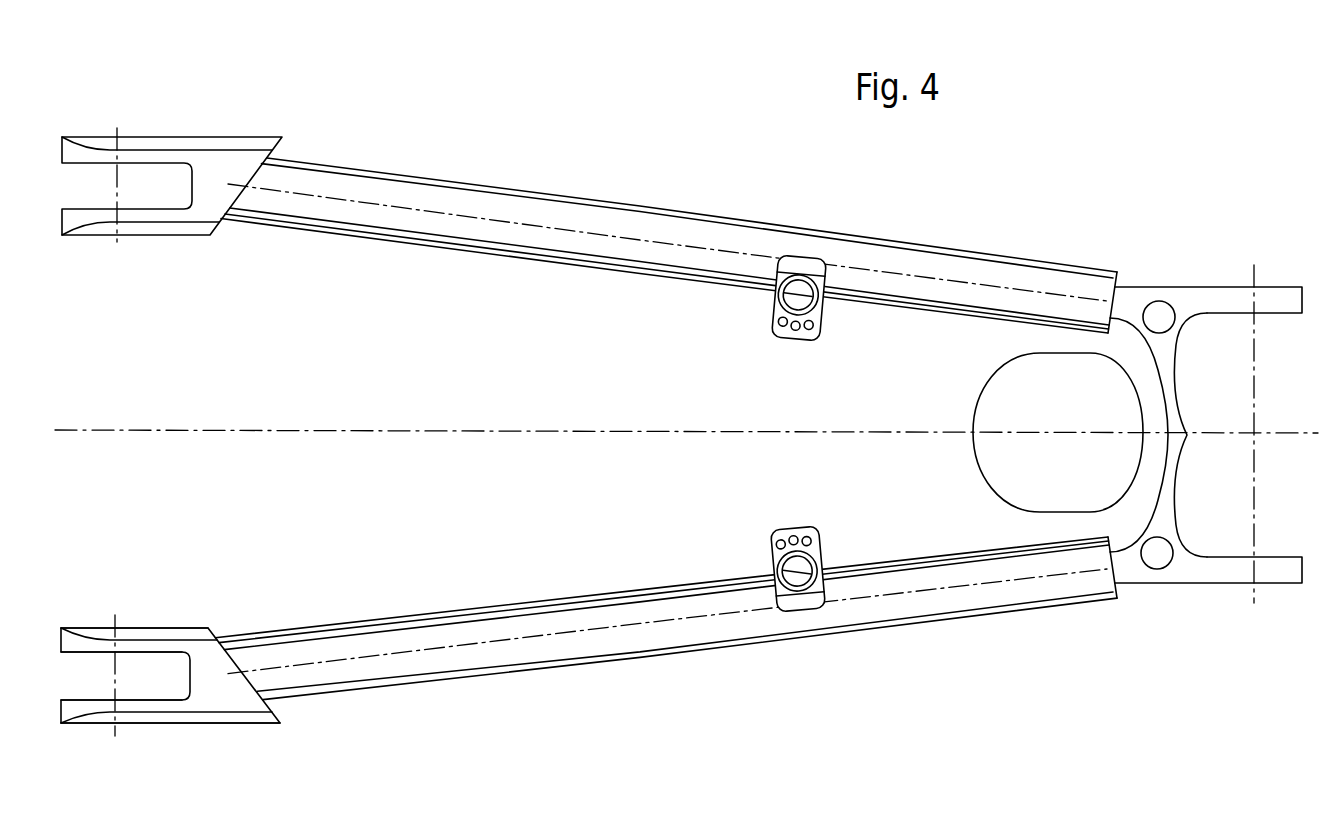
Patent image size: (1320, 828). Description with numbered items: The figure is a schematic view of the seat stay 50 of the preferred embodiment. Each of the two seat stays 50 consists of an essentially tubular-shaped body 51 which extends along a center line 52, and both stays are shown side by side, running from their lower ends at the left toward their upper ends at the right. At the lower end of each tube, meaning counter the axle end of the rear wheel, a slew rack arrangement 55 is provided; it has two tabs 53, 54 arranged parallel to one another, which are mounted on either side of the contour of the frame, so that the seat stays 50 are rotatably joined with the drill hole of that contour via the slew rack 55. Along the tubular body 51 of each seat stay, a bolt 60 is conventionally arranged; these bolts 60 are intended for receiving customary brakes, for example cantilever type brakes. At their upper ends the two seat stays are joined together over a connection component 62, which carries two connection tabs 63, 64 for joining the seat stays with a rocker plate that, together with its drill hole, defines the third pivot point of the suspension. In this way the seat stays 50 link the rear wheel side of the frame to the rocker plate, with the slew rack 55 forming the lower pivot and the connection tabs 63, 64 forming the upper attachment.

The seat stay 50 is at (582, 198).
The tubular-shaped body 51 is at (419, 678).
The center line 52 is at (540, 646).
The tab 53 is at (72, 718).
The tab 54 is at (83, 636).
The slew rack arrangement 55 is at (211, 697).
The bolt 60 is at (800, 597).
The connection component 62 is at (1173, 395).
The connection tab 63 is at (1278, 582).
The connection tab 64 is at (1282, 292).